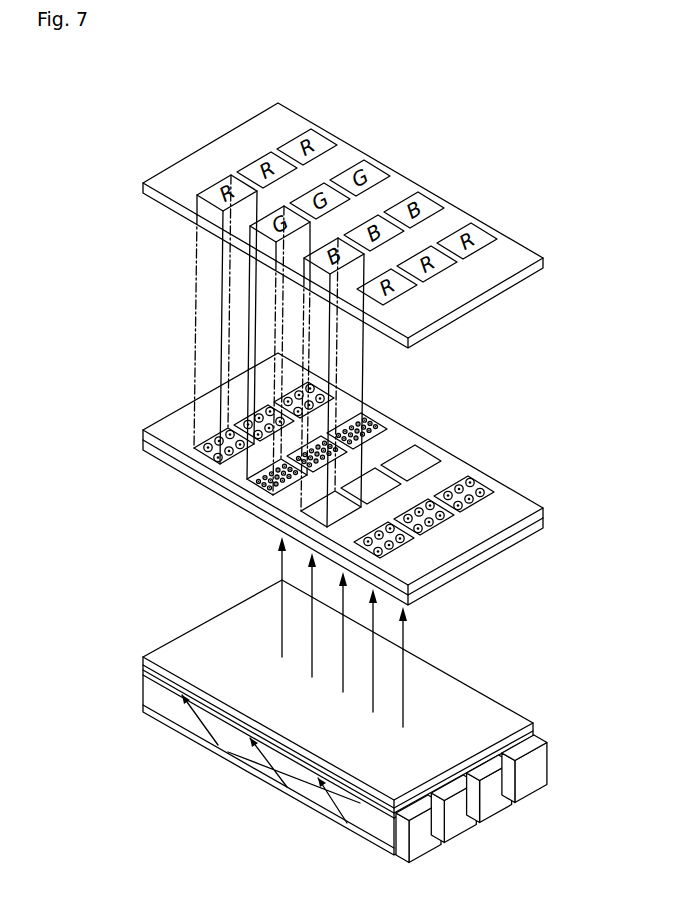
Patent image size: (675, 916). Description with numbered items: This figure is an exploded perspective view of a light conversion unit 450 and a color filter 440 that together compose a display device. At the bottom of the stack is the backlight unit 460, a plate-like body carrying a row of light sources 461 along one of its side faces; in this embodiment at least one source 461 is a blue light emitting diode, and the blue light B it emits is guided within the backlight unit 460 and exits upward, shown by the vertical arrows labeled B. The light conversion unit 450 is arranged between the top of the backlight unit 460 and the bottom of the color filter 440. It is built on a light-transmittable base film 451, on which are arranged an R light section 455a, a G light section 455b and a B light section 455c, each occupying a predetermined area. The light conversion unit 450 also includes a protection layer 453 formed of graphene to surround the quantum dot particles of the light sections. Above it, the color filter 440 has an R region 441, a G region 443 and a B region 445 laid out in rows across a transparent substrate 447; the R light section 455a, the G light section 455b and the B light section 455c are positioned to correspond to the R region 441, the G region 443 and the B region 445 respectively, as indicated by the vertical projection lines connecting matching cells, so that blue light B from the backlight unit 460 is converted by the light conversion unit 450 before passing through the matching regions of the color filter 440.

The color filter 440 is at (386, 215).
The R region 441 is at (323, 138).
The G region 443 is at (374, 172).
The B region 445 is at (424, 200).
The transparent substrate 447 is at (490, 272).
The light conversion unit 450 is at (362, 476).
The light-transmittable base film 451 is at (544, 528).
The protection layer 453 is at (544, 513).
The R light section 455a is at (326, 397).
The G light section 455b is at (369, 423).
The B light section 455c is at (417, 458).
The backlight unit 460 is at (386, 721).
The blue light emitting diode 461 is at (500, 797).
The blue light B is at (408, 668).